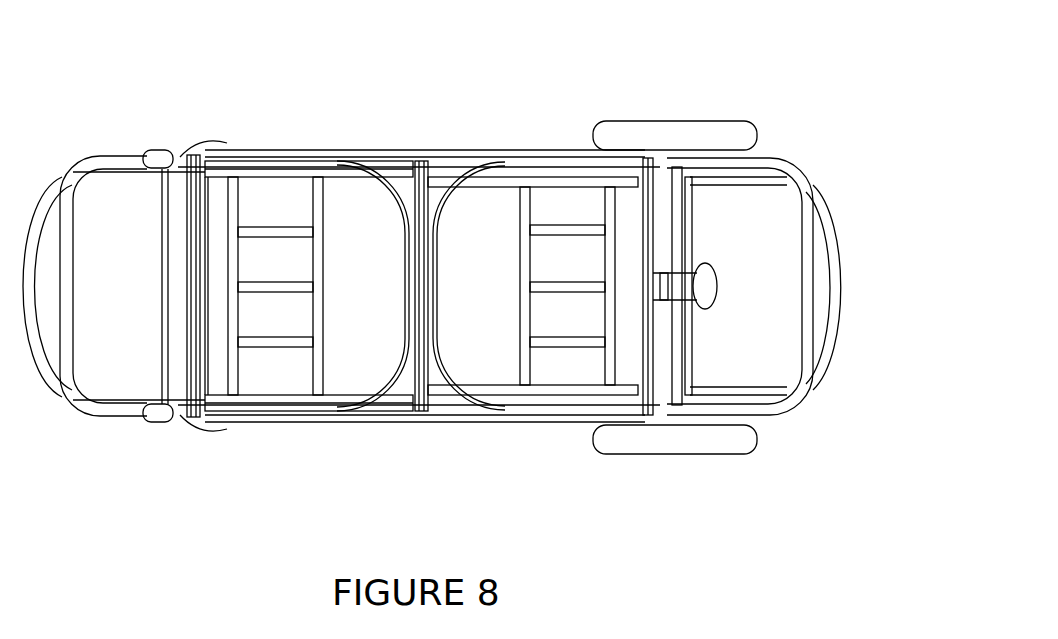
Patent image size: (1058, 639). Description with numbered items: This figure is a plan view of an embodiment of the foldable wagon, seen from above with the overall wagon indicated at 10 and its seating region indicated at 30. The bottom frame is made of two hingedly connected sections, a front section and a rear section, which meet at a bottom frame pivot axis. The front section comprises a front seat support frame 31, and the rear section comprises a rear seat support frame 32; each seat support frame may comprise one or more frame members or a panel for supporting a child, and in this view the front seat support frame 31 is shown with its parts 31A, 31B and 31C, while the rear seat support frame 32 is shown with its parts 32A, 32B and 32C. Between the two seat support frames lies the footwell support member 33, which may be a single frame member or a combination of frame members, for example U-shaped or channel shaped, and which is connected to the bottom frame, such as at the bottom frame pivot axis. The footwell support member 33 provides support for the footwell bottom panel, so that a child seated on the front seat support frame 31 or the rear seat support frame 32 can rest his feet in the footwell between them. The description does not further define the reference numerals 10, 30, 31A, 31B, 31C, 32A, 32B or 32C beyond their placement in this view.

The vehicle 10 is at (110, 56).
The modular cargo assembly 30 is at (363, 449).
The front seat support frame 31 is at (422, 122).
The first module first side panel 31A is at (355, 175).
The first module second side panel 31B is at (355, 398).
The first module cross member 31C is at (323, 287).
The rear seat support frame 32 is at (662, 122).
The second module first side panel 32A is at (488, 187).
The second module second side panel 32B is at (487, 388).
The second module cross member 32C is at (518, 285).
The footwell support member 33 is at (427, 367).